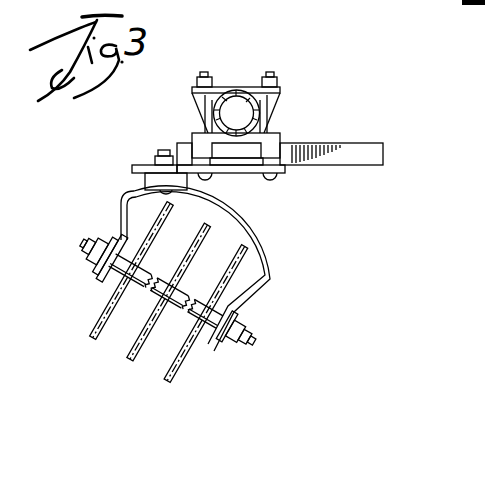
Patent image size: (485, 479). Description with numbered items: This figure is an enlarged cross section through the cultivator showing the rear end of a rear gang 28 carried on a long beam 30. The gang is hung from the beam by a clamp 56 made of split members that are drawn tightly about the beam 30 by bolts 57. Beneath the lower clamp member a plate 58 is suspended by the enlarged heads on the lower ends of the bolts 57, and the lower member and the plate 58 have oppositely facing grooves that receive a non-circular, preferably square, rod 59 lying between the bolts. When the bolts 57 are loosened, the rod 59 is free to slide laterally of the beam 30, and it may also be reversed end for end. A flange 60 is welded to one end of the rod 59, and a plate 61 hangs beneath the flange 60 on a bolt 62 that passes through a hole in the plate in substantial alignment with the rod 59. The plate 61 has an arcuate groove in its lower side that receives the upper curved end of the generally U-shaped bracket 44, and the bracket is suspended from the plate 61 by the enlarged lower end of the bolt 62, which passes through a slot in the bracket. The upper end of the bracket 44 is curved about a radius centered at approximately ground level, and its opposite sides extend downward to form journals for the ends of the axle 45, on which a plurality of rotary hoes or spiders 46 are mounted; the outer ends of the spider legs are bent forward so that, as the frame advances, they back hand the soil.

The rear gang 28 is at (196, 313).
The beam 30 is at (241, 88).
The bracket 44 is at (254, 226).
The axle 45 is at (257, 344).
The rotary hoes or spiders 46 is at (173, 373).
The clamp 56 is at (188, 128).
The bolts 57 is at (282, 117).
The plate 58 is at (284, 173).
The rod 59 is at (376, 144).
The flange 60 is at (134, 166).
The plate 61 is at (146, 183).
The bolt 62 is at (160, 152).